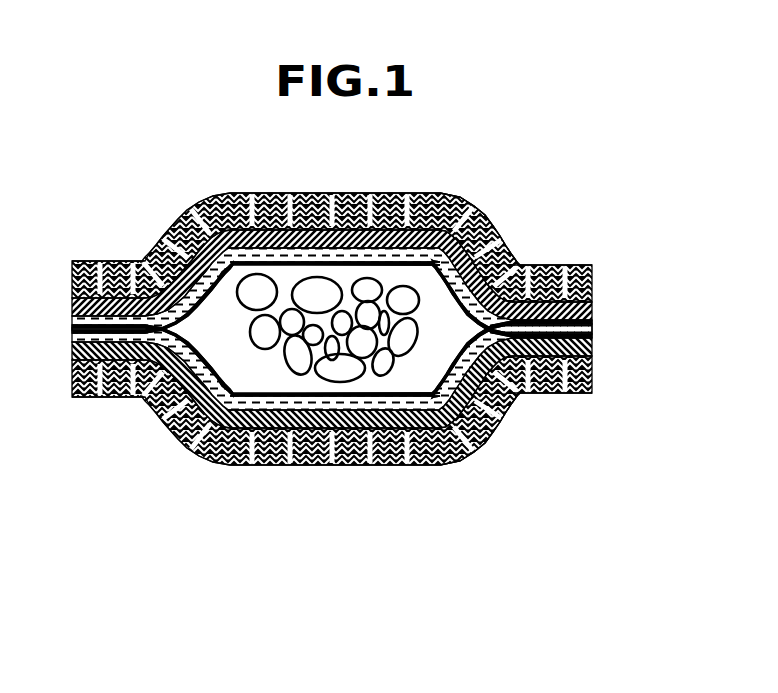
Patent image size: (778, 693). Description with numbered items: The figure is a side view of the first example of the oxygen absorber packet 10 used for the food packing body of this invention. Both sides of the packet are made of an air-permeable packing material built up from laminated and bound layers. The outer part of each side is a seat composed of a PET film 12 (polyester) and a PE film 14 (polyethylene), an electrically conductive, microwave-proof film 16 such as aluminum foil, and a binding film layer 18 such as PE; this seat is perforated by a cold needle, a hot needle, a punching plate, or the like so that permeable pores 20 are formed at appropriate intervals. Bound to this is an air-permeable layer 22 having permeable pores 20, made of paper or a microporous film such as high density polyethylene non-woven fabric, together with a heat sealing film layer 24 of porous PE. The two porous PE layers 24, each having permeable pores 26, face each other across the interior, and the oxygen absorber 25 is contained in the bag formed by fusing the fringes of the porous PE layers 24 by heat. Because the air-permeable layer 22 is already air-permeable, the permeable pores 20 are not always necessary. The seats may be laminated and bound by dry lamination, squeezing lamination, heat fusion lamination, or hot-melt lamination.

The oxygen absorber packet 10 is at (490, 186).
The PET film 12 is at (588, 262).
The PE film 14 is at (592, 287).
The electrically conductive film 16 is at (592, 293).
The binding film layer 18 is at (592, 300).
The permeable pores 20 is at (506, 262).
The air-permeable layer 22 is at (592, 310).
The heat sealing film layer 24 is at (592, 320).
The oxygen absorber 25 is at (343, 372).
The permeable pores 26 is at (315, 192).